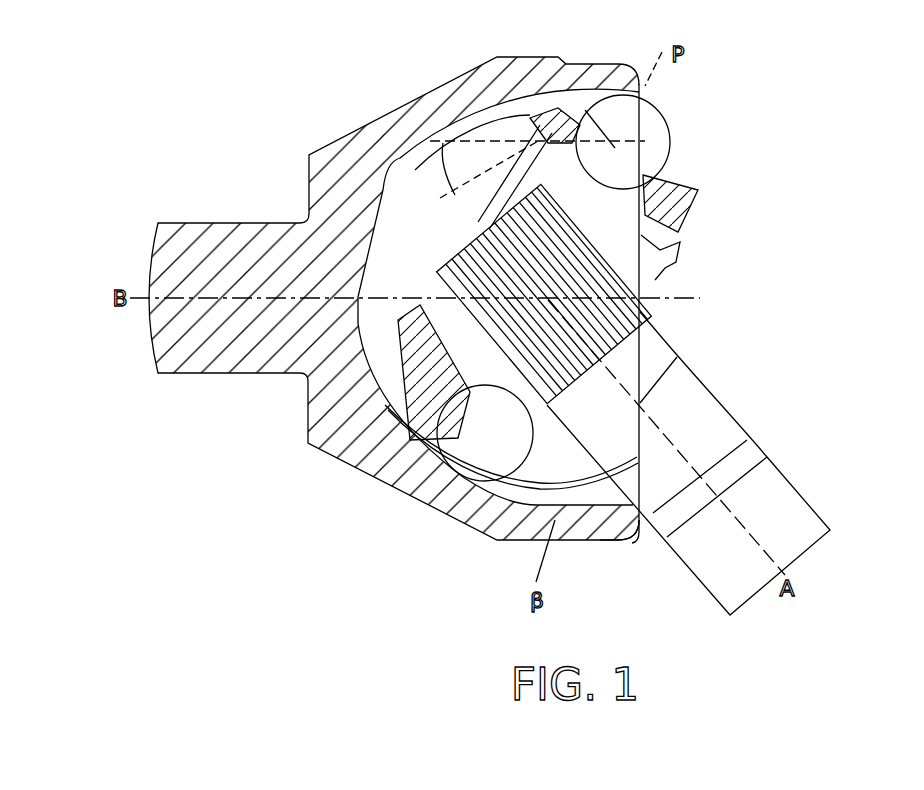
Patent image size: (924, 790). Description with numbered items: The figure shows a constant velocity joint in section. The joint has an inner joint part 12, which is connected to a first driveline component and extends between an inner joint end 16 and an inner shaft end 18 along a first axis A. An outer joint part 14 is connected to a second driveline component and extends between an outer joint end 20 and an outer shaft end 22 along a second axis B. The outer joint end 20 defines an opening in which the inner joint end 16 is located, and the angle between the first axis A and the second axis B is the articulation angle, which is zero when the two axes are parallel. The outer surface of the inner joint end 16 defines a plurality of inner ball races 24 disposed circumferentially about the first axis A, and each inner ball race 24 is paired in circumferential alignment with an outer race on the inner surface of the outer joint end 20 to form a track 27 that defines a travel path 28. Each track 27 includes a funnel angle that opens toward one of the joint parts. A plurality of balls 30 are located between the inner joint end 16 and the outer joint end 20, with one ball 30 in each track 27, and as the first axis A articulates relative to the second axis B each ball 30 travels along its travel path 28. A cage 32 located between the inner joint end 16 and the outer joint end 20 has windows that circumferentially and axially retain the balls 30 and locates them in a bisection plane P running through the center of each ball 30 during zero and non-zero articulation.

The inner joint part 12 is at (378, 462).
The outer joint part 14 is at (300, 238).
The inner joint end 16 is at (447, 243).
The inner shaft end 18 is at (817, 547).
The outer joint end 20 is at (640, 540).
The outer shaft end 22 is at (177, 350).
The inner ball races 24 is at (672, 245).
The track 27 is at (624, 542).
The travel path 28 is at (432, 133).
The balls 30 is at (650, 123).
The cage 32 is at (693, 175).